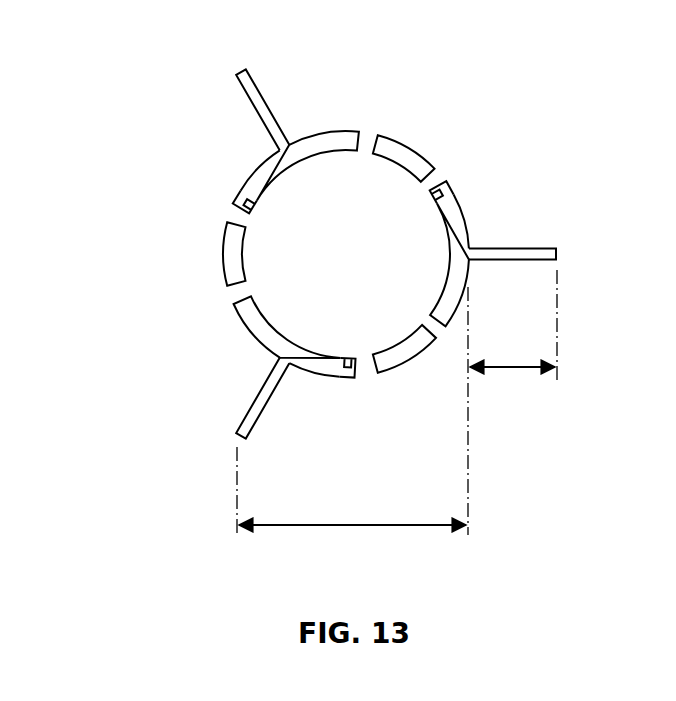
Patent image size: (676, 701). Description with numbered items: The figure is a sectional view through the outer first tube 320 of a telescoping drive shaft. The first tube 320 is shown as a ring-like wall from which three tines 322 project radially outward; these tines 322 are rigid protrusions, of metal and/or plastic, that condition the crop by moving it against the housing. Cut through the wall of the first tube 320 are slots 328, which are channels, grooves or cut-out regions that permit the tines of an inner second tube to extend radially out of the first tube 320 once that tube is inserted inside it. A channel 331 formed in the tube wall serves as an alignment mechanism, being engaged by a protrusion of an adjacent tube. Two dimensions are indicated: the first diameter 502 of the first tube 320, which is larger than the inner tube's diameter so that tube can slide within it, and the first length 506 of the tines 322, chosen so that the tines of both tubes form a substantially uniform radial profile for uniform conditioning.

The first tube 320 is at (176, 58).
The tines 322 is at (265, 113).
The slots 328 is at (238, 215).
The channel 331 is at (343, 378).
The first diameter 502 is at (353, 525).
The first length 506 is at (513, 367).